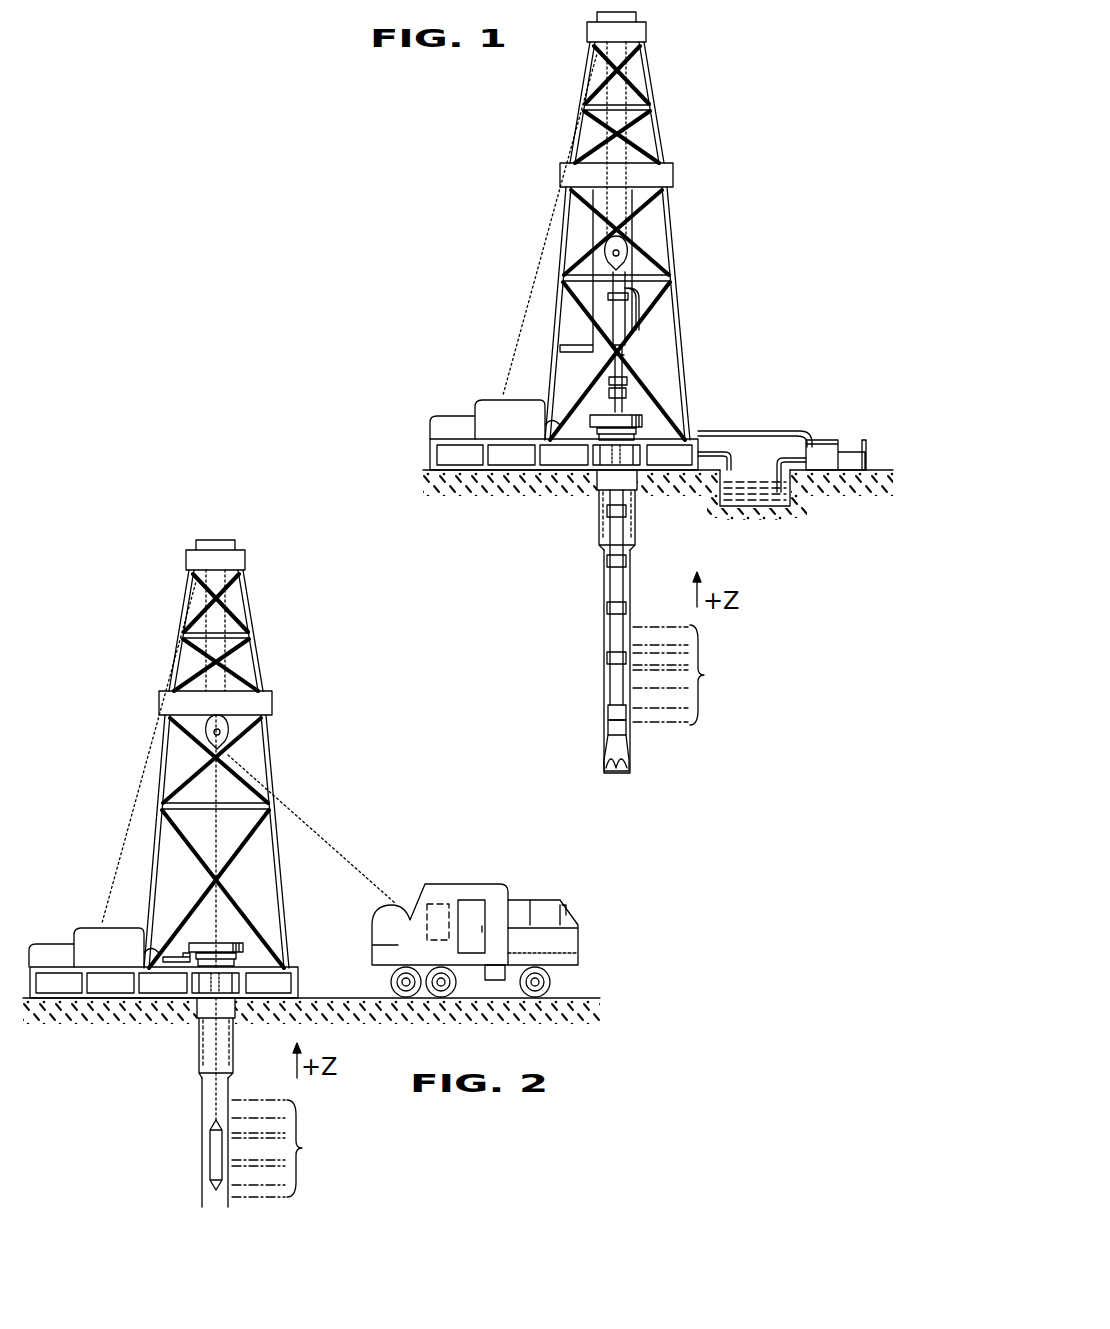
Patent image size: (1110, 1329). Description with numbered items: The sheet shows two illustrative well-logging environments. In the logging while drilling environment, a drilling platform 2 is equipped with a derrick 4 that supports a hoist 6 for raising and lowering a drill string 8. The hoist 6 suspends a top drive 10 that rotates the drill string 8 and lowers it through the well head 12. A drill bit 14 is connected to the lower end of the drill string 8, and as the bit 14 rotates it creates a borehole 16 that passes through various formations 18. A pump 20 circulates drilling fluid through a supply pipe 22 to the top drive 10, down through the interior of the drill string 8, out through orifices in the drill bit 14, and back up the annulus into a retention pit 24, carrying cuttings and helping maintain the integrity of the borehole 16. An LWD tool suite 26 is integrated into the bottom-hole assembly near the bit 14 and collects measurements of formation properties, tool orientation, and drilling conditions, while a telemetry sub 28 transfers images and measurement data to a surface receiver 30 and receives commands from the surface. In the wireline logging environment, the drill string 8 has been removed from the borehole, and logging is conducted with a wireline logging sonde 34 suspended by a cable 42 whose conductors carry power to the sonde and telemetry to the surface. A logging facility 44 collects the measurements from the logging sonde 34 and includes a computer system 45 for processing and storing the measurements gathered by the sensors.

In FIG. 1, the drilling platform 2 is at (430, 445).
In FIG. 2, the drilling platform 2 is at (298, 977).
In FIG. 1, the derrick 4 is at (656, 134).
In FIG. 2, the derrick 4 is at (285, 930).
In FIG. 1, the hoist 6 is at (622, 252).
In FIG. 2, the hoist 6 is at (228, 733).
In FIG. 1, the drill string 8 is at (620, 594).
In FIG. 1, the top drive 10 is at (618, 315).
In FIG. 1, the well head 12 is at (634, 415).
In FIG. 2, the well head 12 is at (233, 943).
In FIG. 1, the drill bit 14 is at (627, 765).
In FIG. 1, the borehole 16 is at (633, 600).
In FIG. 1, the formations 18 is at (688, 675).
In FIG. 2, the formations 18 is at (286, 1148).
In FIG. 1, the pump 20 is at (816, 446).
In FIG. 1, the supply pipe 22 is at (765, 430).
In FIG. 1, the retention pit 24 is at (735, 497).
In FIG. 1, the LWD tool suite 26 is at (612, 735).
In FIG. 1, the telemetry sub 28 is at (614, 718).
In FIG. 1, the surface receiver 30 is at (620, 382).
In FIG. 2, the wireline logging sonde 34 is at (212, 1147).
In FIG. 2, the cable 42 is at (307, 794).
In FIG. 2, the logging facility 44 is at (498, 883).
In FIG. 2, the computer system 45 is at (430, 903).